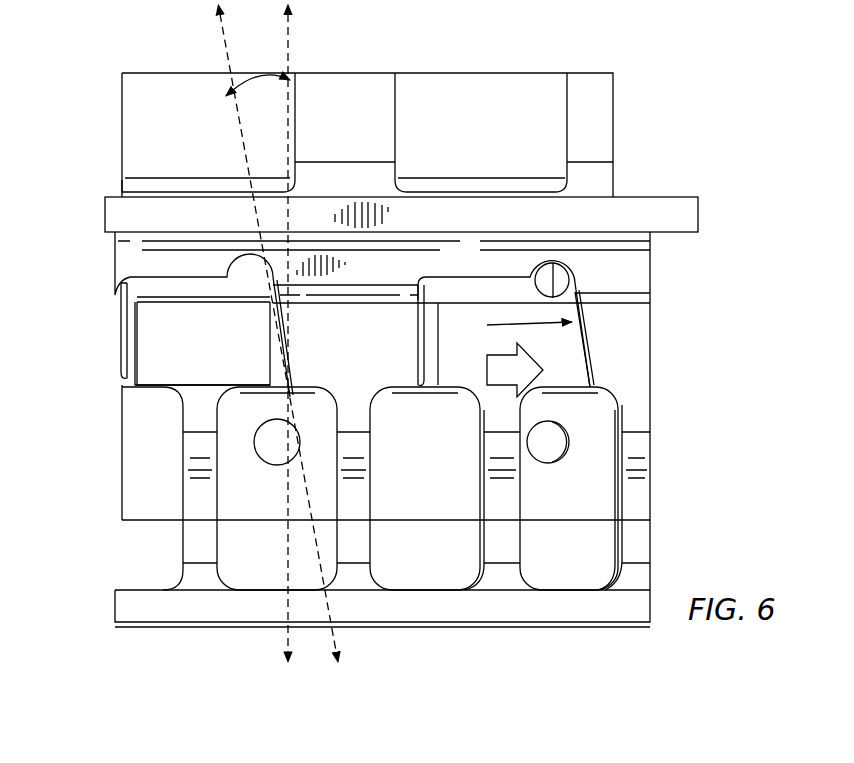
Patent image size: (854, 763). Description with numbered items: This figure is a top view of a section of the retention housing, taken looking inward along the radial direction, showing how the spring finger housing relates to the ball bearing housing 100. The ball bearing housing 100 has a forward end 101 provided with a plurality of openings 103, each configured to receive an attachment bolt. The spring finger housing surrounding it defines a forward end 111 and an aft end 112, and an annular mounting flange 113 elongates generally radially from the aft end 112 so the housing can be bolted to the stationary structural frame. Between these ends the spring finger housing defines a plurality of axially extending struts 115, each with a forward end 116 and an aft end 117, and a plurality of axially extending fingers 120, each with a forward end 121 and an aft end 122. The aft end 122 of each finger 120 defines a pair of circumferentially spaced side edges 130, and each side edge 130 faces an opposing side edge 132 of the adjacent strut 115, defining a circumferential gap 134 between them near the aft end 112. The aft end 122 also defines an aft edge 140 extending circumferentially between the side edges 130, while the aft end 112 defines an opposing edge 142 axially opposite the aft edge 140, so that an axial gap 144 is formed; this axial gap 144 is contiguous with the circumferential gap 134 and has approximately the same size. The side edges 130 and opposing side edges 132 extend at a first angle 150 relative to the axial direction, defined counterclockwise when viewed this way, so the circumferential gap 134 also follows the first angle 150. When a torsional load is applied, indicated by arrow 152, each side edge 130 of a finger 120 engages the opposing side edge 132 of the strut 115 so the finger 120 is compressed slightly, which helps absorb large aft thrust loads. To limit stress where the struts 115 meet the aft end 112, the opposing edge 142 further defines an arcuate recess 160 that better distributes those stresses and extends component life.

The ball bearing housing 100 is at (595, 483).
The forward end of the ball bearing housing 101 is at (597, 523).
The opening 103 is at (597, 432).
The forward end of the spring finger housing 111 is at (203, 628).
The aft end of the spring finger housing 112 is at (128, 258).
The annular mounting flange 113 is at (680, 207).
The strut 115 is at (358, 497).
The forward end of the strut 116 is at (360, 592).
The aft end of the strut 117 is at (375, 272).
The finger 120 is at (200, 488).
The forward end of the finger 121 is at (183, 594).
The aft end of the finger 122 is at (170, 347).
The side edge 130 is at (133, 330).
The opposing side edge 132 is at (512, 327).
The circumferential gap 134 is at (423, 308).
The aft edge 140 is at (181, 298).
The opposing edge 142 is at (208, 282).
The axial gap 144 is at (508, 283).
The first angle 150 is at (263, 80).
The arrow 152 is at (515, 370).
The arcuate recess 160 is at (565, 262).